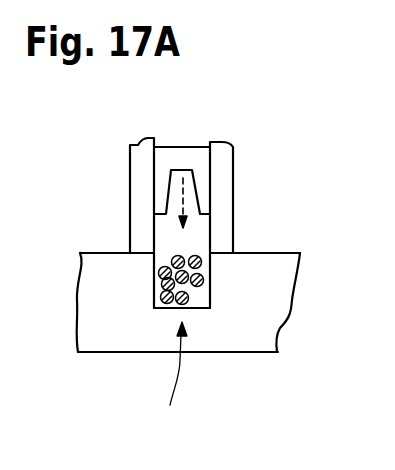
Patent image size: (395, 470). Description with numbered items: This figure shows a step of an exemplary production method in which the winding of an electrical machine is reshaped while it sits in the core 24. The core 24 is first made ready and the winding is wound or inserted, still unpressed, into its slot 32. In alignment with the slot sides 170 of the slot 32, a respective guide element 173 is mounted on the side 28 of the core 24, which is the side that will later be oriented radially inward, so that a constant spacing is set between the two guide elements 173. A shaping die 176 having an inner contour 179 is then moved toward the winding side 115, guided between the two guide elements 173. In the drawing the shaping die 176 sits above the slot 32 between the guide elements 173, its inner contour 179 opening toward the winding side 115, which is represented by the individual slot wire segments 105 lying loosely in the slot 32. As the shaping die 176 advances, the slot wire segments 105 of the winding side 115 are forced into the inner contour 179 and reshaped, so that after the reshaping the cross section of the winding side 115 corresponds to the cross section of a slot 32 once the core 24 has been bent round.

The core 24 is at (120, 352).
The side of the core 28 is at (240, 252).
The slot 32 is at (195, 307).
The slot wire segments 105 is at (213, 280).
The winding side 115 is at (172, 379).
The slot sides 170 is at (157, 292).
The guide element 173 is at (142, 182).
The shaping die 176 is at (182, 162).
The inner contour 179 is at (170, 223).